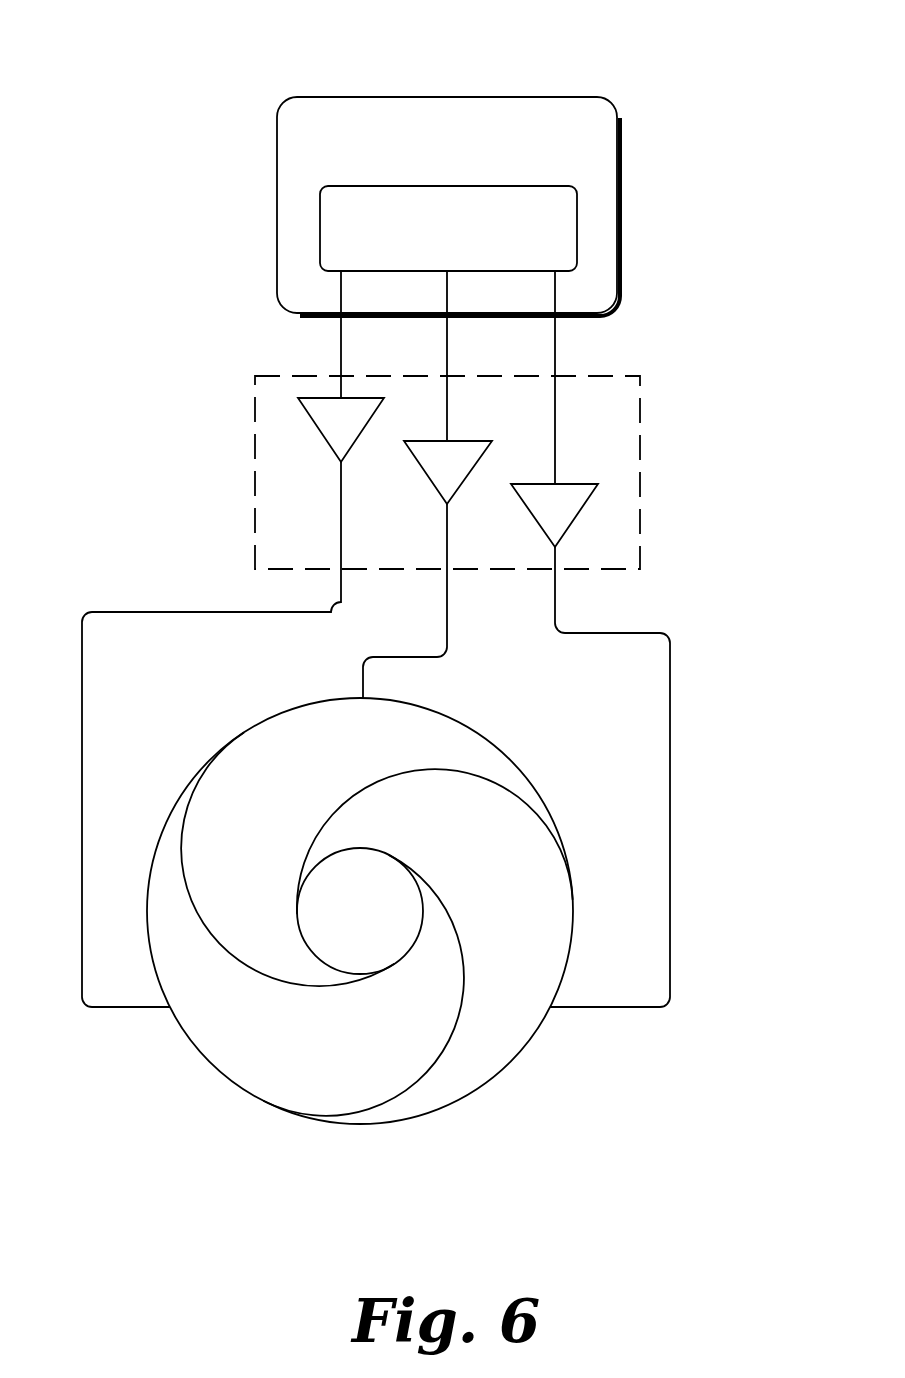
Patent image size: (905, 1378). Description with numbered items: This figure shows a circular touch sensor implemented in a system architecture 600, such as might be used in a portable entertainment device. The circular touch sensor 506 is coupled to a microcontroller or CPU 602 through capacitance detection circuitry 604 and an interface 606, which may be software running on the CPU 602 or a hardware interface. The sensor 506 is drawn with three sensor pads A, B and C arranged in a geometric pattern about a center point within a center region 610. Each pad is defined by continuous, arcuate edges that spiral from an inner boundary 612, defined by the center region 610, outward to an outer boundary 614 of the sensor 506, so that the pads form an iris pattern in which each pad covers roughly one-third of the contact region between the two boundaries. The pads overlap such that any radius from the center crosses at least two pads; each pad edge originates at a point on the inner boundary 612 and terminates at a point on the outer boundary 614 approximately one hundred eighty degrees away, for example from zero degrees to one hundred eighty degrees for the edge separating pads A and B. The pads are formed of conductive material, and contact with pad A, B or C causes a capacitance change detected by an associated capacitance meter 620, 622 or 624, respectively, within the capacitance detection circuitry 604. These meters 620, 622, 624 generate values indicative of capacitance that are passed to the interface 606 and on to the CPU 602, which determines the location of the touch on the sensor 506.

The system architecture 600 is at (708, 53).
The CPU 602 is at (509, 140).
The interface 606 is at (540, 242).
The capacitance detection circuitry 604 is at (642, 418).
The capacitance meter 620 is at (466, 469).
The capacitance meter 622 is at (574, 512).
The capacitance meter 624 is at (360, 426).
The circular touch sensor 506 is at (376, 798).
The center region 610 is at (383, 927).
The inner boundary 612 is at (300, 925).
The outer boundary 614 is at (531, 1038).